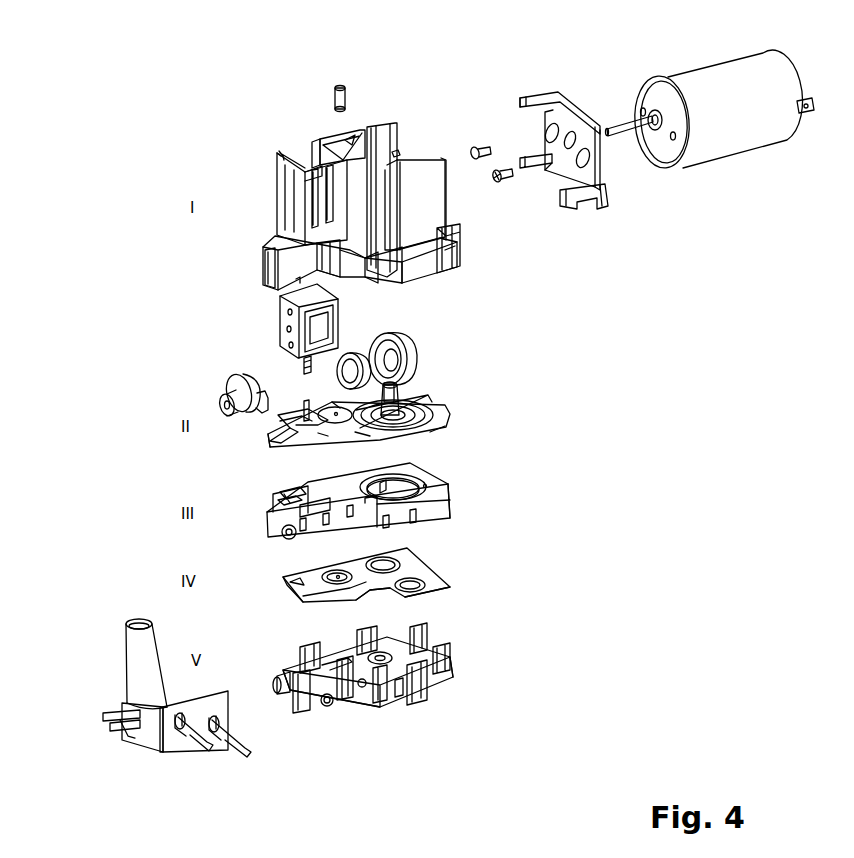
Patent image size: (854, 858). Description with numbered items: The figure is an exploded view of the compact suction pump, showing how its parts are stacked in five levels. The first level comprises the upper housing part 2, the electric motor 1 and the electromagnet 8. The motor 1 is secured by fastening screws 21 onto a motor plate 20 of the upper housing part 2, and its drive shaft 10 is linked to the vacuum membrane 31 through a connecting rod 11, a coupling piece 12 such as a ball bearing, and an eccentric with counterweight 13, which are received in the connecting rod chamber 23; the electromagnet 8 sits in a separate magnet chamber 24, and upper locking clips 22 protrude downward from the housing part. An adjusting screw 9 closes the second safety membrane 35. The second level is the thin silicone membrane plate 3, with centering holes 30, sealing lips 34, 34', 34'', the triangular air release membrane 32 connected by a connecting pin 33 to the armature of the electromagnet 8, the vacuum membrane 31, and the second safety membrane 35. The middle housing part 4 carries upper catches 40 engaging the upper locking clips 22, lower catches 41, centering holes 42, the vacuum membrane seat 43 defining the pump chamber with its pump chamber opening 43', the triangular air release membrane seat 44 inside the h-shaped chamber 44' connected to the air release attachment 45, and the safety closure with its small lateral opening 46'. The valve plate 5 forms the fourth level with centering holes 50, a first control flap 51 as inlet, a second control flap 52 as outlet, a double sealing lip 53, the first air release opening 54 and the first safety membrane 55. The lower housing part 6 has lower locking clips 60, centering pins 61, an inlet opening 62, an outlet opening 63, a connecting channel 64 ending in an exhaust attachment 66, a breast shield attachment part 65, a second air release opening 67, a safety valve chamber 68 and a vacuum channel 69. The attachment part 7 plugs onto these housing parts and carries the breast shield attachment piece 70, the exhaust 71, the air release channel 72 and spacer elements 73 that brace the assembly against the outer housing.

The electric motor 1 is at (713, 93).
The upper housing part 2 is at (428, 103).
The membrane plate 3 is at (452, 385).
The middle housing part 4 is at (452, 460).
The valve plate 5 is at (452, 560).
The lower housing part 6 is at (452, 636).
The attachment part 7 is at (122, 608).
The electromagnet 8 is at (288, 322).
The adjusting screw 9 is at (334, 94).
The drive shaft 10 is at (627, 125).
The connecting rod 11 is at (408, 355).
The coupling piece 12 is at (356, 350).
The eccentric with counterweight 13 is at (228, 392).
The motor plate 20 is at (555, 110).
The fastening screws 21 is at (512, 180).
The upper locking clips 22 is at (458, 248).
The connecting rod chamber 23 is at (350, 140).
The magnet chamber 24 is at (280, 153).
The centering holes 30 is at (440, 418).
The vacuum membrane 31 is at (380, 425).
The air release membrane 32 is at (291, 446).
The connecting pin 33 is at (300, 414).
The upper sealing lip 34 is at (328, 446).
The second sealing lip 34' is at (425, 442).
The third sealing lip 34'' is at (354, 454).
The second safety membrane 35 is at (332, 410).
The upper catches 40 is at (452, 510).
The lower catches 41 is at (415, 520).
The centering holes 42 is at (440, 500).
The vacuum membrane seat 43 is at (423, 486).
The pump chamber opening 43' is at (359, 527).
The air release membrane seat 44 is at (278, 504).
The chamber 44' is at (277, 523).
The air release attachment 45 is at (282, 538).
The lateral opening 46' is at (271, 484).
The centering holes 50 is at (448, 590).
The first control flap 51 is at (370, 562).
The second control flap 52 is at (418, 592).
The double sealing lip 53 is at (368, 592).
The first air release opening 54 is at (282, 582).
The first safety membrane 55 is at (332, 594).
The lower locking clips 60 is at (450, 660).
The centering pins 61 is at (445, 685).
The inlet opening 62 is at (380, 700).
The outlet opening 63 is at (400, 700).
The connecting channel 64 is at (360, 695).
The breast shield attachment part 65 is at (276, 680).
The exhaust attachment 66 is at (323, 707).
The second air release opening 67 is at (287, 668).
The safety valve chamber 68 is at (352, 658).
The vacuum channel 69 is at (388, 652).
The breast shield attachment piece 70 is at (140, 668).
The exhaust 71 is at (235, 750).
The air release channel 72 is at (196, 748).
The spacer elements 73 is at (130, 732).